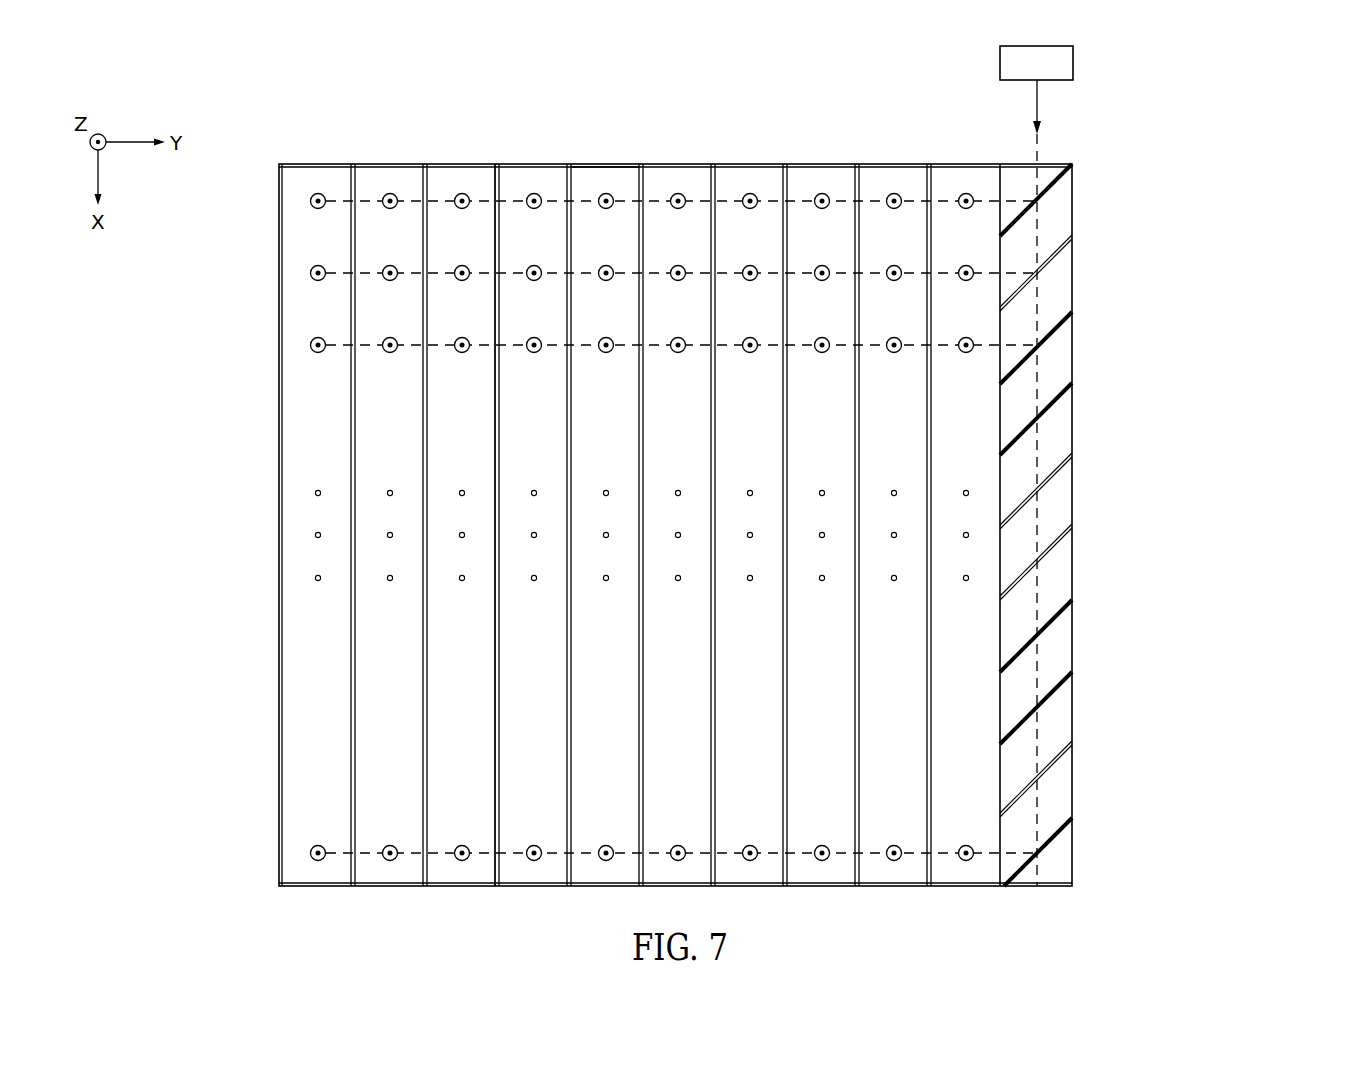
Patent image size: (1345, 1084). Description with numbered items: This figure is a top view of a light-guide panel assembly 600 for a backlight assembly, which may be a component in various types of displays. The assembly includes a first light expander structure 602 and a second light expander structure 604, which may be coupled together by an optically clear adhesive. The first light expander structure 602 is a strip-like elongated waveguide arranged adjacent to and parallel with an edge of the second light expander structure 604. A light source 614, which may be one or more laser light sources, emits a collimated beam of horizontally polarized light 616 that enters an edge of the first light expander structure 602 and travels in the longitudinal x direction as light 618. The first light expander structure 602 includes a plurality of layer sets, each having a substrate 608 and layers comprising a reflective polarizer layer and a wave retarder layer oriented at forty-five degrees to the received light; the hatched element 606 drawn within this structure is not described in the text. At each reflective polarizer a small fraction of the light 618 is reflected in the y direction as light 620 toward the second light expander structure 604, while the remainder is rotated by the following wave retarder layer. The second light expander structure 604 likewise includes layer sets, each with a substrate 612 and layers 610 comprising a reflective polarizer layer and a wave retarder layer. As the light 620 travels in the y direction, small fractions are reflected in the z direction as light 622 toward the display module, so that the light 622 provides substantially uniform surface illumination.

The light-guide panel assembly 600 is at (1236, 104).
The first light expander structure 602 is at (1126, 451).
The second light expander structure 604 is at (451, 128).
The hatch lines / conductive traces 606 is at (1058, 693).
The substrate 608 is at (1058, 575).
The layers 610 is at (643, 183).
The substrate 612 is at (606, 180).
The light source 614 is at (1074, 63).
The light 616 is at (1037, 100).
The light 618 is at (1040, 303).
The light 620 is at (531, 195).
The light 622 is at (745, 185).